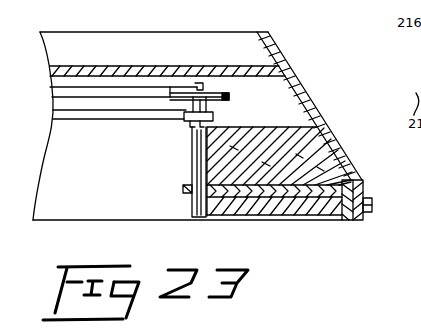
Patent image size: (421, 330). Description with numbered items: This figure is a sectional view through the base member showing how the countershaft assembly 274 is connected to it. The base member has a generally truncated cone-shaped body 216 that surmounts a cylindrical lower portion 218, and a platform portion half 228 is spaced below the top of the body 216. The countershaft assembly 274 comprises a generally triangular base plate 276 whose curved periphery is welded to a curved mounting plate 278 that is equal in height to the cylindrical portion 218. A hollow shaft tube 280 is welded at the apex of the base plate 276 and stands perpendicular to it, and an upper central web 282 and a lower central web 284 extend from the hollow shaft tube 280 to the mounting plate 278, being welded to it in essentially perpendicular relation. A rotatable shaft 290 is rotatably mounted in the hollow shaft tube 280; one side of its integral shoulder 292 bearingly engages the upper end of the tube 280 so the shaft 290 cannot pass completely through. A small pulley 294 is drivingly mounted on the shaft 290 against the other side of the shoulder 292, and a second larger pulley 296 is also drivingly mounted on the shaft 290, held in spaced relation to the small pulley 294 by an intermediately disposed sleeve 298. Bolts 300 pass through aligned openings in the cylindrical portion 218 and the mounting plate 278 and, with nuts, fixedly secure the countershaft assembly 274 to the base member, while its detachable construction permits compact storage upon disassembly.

The countershaft assembly 274 is at (143, 141).
The platform portion half 228 is at (197, 66).
The truncated cone-shaped body 216 is at (312, 103).
The rotatable shaft 290 is at (204, 86).
The second larger pulley 296 is at (231, 97).
The sleeve 298 is at (190, 101).
The small pulley 294 is at (210, 112).
The integral shoulder 292 is at (190, 129).
The hollow shaft tube 280 is at (194, 163).
The base plate 276 is at (183, 188).
The upper central web 282 is at (272, 167).
The lower central web 284 is at (275, 214).
The cylindrical lower portion 218 is at (360, 185).
The curved mounting plate 278 is at (346, 220).
The bolts 300 is at (372, 206).